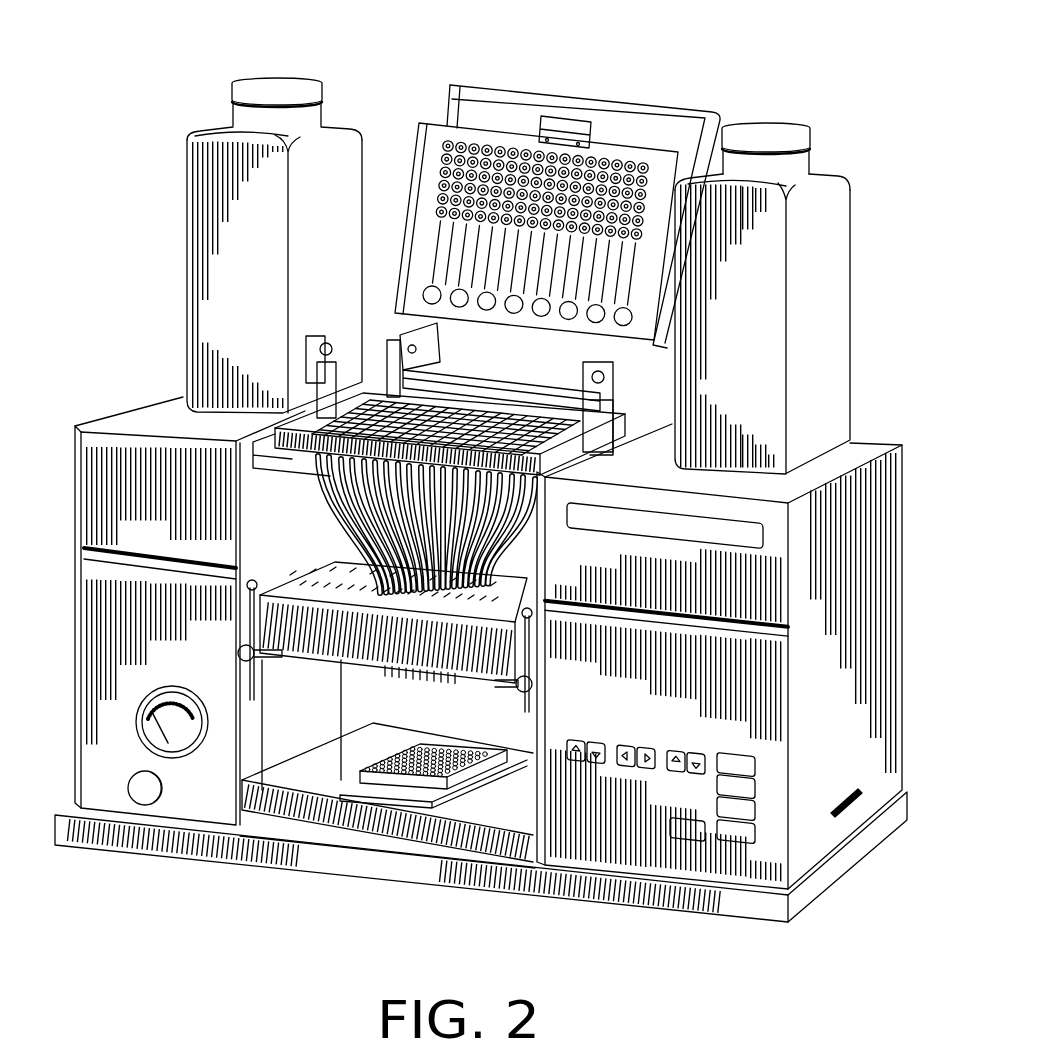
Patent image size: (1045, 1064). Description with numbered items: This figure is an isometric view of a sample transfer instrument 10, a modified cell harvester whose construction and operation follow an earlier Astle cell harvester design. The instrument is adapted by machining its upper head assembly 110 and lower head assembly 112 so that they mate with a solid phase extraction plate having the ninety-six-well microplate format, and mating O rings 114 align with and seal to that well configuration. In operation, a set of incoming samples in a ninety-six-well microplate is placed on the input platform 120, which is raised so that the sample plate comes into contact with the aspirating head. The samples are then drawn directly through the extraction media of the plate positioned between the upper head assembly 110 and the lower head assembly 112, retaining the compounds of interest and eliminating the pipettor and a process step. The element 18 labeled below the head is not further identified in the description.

The cell harvester apparatus 10 is at (785, 82).
The upper head assembly 110 is at (462, 248).
The mating O rings 114 is at (553, 157).
The lower head assembly 112 is at (297, 441).
The dispensing head with needles 18 is at (387, 678).
The input platform 120 is at (404, 762).